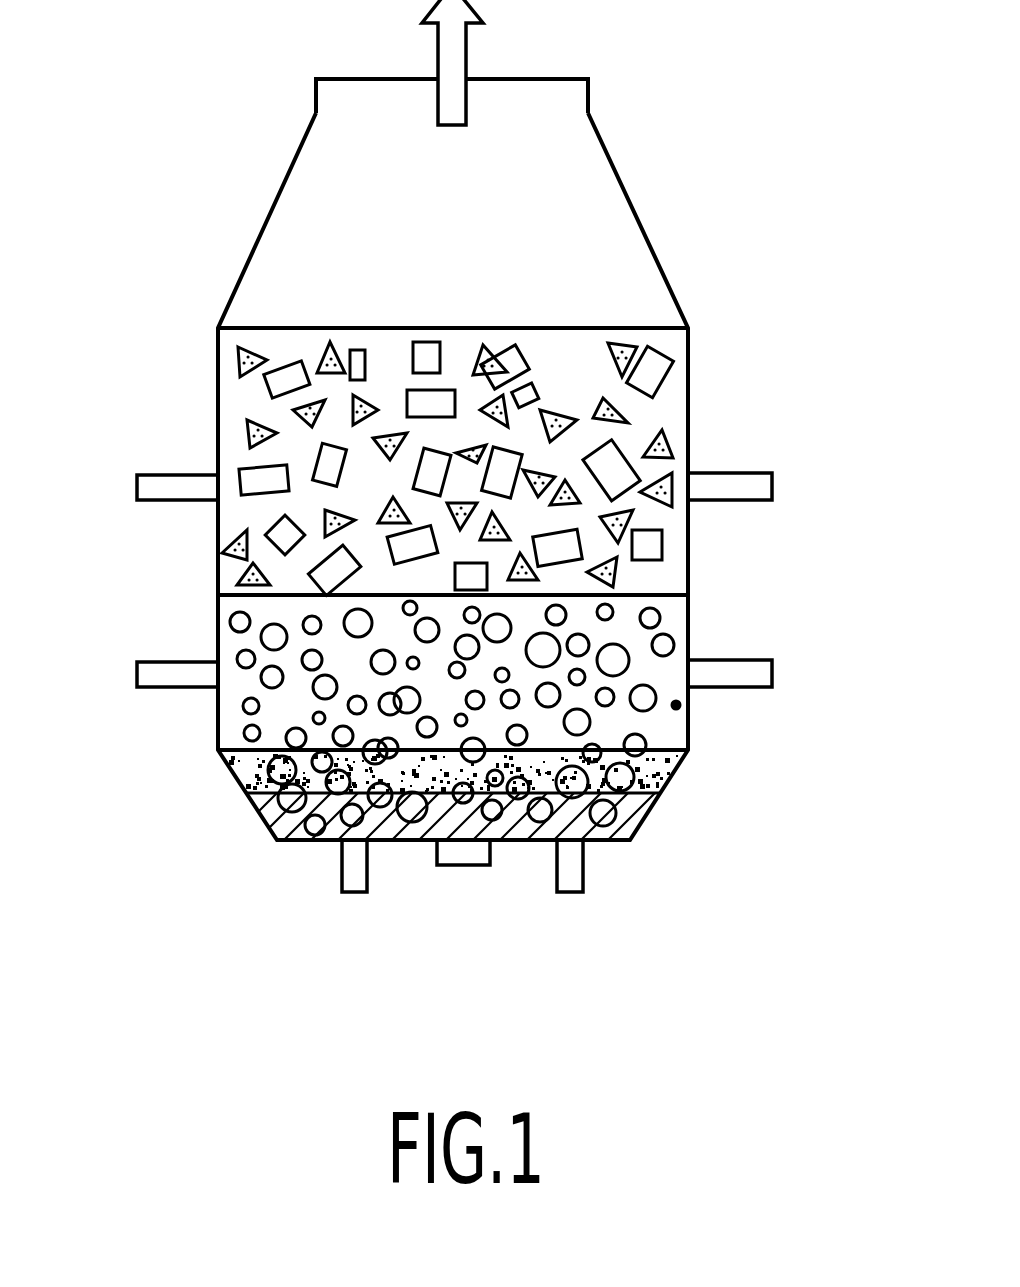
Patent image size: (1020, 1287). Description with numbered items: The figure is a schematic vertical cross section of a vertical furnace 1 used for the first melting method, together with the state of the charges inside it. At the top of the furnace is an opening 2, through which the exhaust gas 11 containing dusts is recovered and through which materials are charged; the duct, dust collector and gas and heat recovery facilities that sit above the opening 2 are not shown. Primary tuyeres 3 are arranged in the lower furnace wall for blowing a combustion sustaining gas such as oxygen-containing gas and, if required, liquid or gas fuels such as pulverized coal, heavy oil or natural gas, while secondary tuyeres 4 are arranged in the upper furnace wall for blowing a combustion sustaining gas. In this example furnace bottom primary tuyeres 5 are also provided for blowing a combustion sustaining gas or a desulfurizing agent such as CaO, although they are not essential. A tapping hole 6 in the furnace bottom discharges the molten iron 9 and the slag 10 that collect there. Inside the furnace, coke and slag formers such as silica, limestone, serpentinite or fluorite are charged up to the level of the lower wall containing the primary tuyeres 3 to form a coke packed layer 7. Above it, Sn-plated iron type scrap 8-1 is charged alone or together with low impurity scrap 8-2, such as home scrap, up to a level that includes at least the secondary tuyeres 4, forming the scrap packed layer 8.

The vertical furnace 1 is at (650, 237).
The opening 2 is at (512, 93).
The primary tuyeres 3 is at (160, 662).
The secondary tuyeres 4 is at (170, 490).
The furnace bottom primary tuyeres 5 is at (342, 893).
The tapping hole 6 is at (452, 867).
The coke packed layer 7 is at (290, 705).
The scrap packed layer 8 is at (248, 410).
The Sn-plated iron type scrap 8-1 is at (255, 490).
The low impurity scrap 8-2 is at (242, 363).
The molten iron 9 is at (597, 838).
The slag 10 is at (600, 750).
The exhaust gas 11 is at (437, 58).